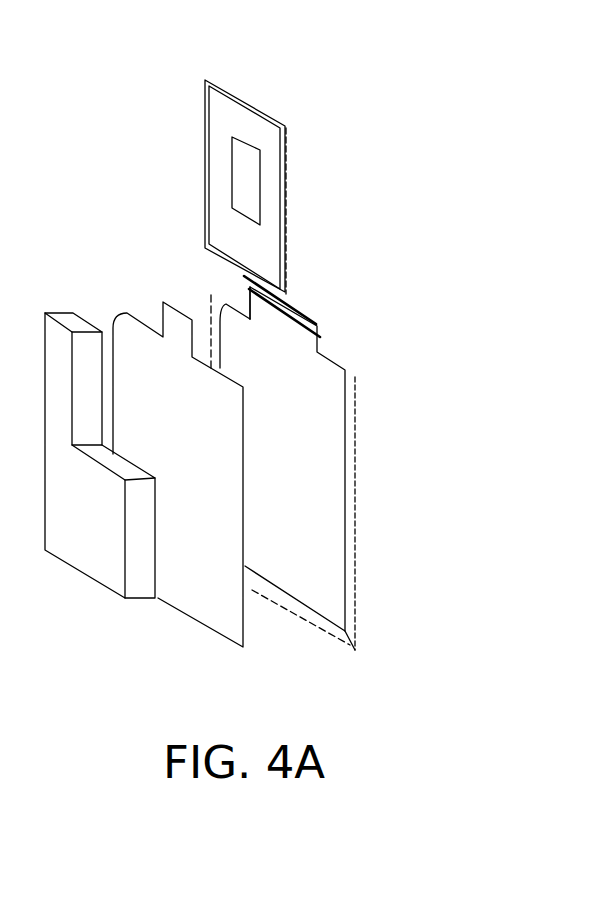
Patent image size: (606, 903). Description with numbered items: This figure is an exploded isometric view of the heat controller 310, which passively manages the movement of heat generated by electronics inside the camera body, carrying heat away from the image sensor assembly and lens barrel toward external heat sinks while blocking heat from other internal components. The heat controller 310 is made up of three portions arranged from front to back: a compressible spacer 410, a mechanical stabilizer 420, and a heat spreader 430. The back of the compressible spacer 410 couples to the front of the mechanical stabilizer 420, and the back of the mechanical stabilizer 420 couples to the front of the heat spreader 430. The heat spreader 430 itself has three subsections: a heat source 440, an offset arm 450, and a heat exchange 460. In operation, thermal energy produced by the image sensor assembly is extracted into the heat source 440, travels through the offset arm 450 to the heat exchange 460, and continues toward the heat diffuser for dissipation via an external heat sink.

The heat controller 310 is at (152, 70).
The compressible spacer 410 is at (102, 588).
The mechanical stabilizer 420 is at (240, 646).
The heat spreader 430 is at (404, 584).
The heat source 440 is at (287, 168).
The offset arm 450 is at (315, 299).
The heat exchange 460 is at (358, 394).